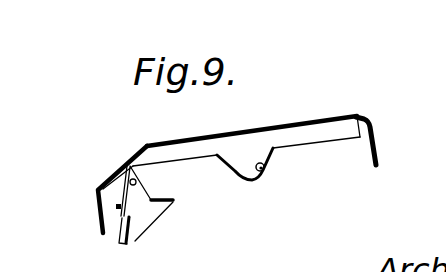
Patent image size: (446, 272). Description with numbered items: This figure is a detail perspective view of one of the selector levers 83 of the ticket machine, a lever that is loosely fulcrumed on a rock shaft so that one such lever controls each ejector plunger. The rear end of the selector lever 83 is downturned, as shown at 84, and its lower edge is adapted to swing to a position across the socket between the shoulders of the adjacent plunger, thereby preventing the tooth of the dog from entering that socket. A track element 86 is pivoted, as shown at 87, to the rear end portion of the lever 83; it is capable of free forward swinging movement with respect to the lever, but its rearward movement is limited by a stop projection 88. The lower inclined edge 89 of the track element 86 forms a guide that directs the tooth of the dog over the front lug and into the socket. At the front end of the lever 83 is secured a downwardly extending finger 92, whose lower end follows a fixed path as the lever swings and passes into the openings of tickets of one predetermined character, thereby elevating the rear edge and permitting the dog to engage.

The selector lever 83 is at (293, 138).
The downturned rear end 84 is at (114, 225).
The track element 86 is at (146, 213).
The pivot 87 is at (126, 176).
The stop projection 88 is at (116, 207).
The lower inclined edge 89 is at (135, 242).
The finger 92 is at (373, 151).